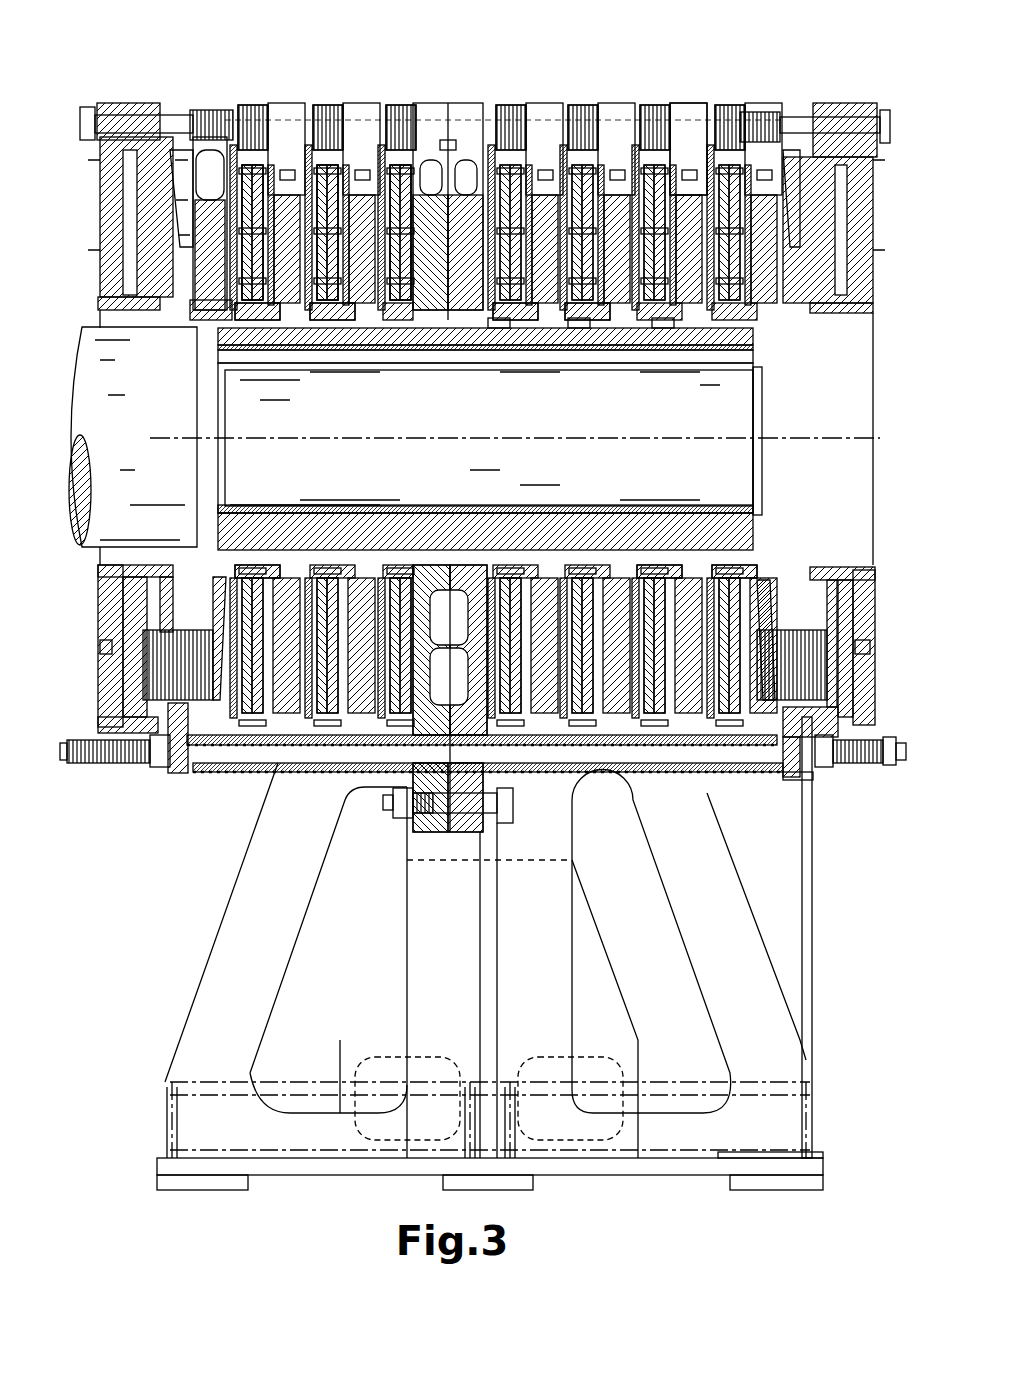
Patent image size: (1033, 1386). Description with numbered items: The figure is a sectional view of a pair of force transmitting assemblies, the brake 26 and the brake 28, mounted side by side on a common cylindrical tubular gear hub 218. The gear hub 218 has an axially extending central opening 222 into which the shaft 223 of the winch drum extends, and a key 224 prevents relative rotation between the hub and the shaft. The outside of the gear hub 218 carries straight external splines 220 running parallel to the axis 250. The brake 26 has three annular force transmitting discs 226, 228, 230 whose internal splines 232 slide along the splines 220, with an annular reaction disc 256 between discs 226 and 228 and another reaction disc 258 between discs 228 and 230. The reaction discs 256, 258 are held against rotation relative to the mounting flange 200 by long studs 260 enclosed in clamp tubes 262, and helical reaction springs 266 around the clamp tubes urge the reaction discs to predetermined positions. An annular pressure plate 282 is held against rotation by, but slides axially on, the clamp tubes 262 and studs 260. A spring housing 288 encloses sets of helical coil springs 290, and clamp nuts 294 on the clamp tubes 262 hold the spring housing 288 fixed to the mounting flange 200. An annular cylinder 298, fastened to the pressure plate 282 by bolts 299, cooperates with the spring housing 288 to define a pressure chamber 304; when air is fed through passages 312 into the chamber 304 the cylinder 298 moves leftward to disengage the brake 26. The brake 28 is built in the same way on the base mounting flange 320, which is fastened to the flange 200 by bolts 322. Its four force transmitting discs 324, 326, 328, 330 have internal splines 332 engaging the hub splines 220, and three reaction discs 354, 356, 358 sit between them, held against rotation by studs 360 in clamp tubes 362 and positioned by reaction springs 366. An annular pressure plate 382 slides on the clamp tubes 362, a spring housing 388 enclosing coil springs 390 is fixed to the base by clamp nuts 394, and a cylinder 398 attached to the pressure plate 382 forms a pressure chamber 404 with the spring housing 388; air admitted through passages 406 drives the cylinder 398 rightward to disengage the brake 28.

The brake 26 is at (212, 80).
The brake 28 is at (758, 82).
The mounting flange 200 is at (398, 833).
The gear hub 218 is at (228, 336).
The external splines 220 is at (222, 350).
The central opening 222 is at (230, 510).
The shaft 223 is at (735, 424).
The key 224 is at (745, 353).
The force transmitting disc 226 is at (256, 104).
The force transmitting disc 228 is at (331, 104).
The force transmitting disc 230 is at (400, 104).
The internal splines 232 is at (235, 346).
The axis 250 is at (790, 452).
The reaction disc 256 is at (290, 336).
The reaction disc 258 is at (372, 336).
The studs 260 is at (95, 762).
The clamp tubes 262 is at (245, 772).
The reaction springs 266 is at (243, 104).
The pressure plate 282 is at (182, 775).
The spring housing 288 is at (130, 610).
The helical coil springs 290 is at (240, 562).
The clamp nuts 294 is at (155, 762).
The cylinder 298 is at (110, 690).
The bolts 299 is at (130, 123).
The pressure chamber 304 is at (128, 562).
The passages 312 is at (108, 648).
The base mounting flange 320 is at (470, 836).
The bolts 322 is at (500, 812).
The force transmitting disc 324 is at (512, 777).
The force transmitting disc 326 is at (598, 797).
The force transmitting disc 328 is at (648, 774).
The force transmitting disc 330 is at (705, 562).
The internal splines 332 is at (497, 332).
The reaction disc 354 is at (535, 336).
The reaction disc 356 is at (602, 336).
The reaction disc 358 is at (690, 104).
The studs 360 is at (890, 766).
The clamp tubes 362 is at (722, 808).
The reaction springs 366 is at (508, 104).
The pressure plate 382 is at (770, 565).
The spring housing 388 is at (796, 782).
The helical coil springs 390 is at (790, 774).
The clamp nuts 394 is at (812, 800).
The cylinder 398 is at (858, 165).
The pressure chamber 404 is at (840, 312).
The passages 406 is at (866, 600).